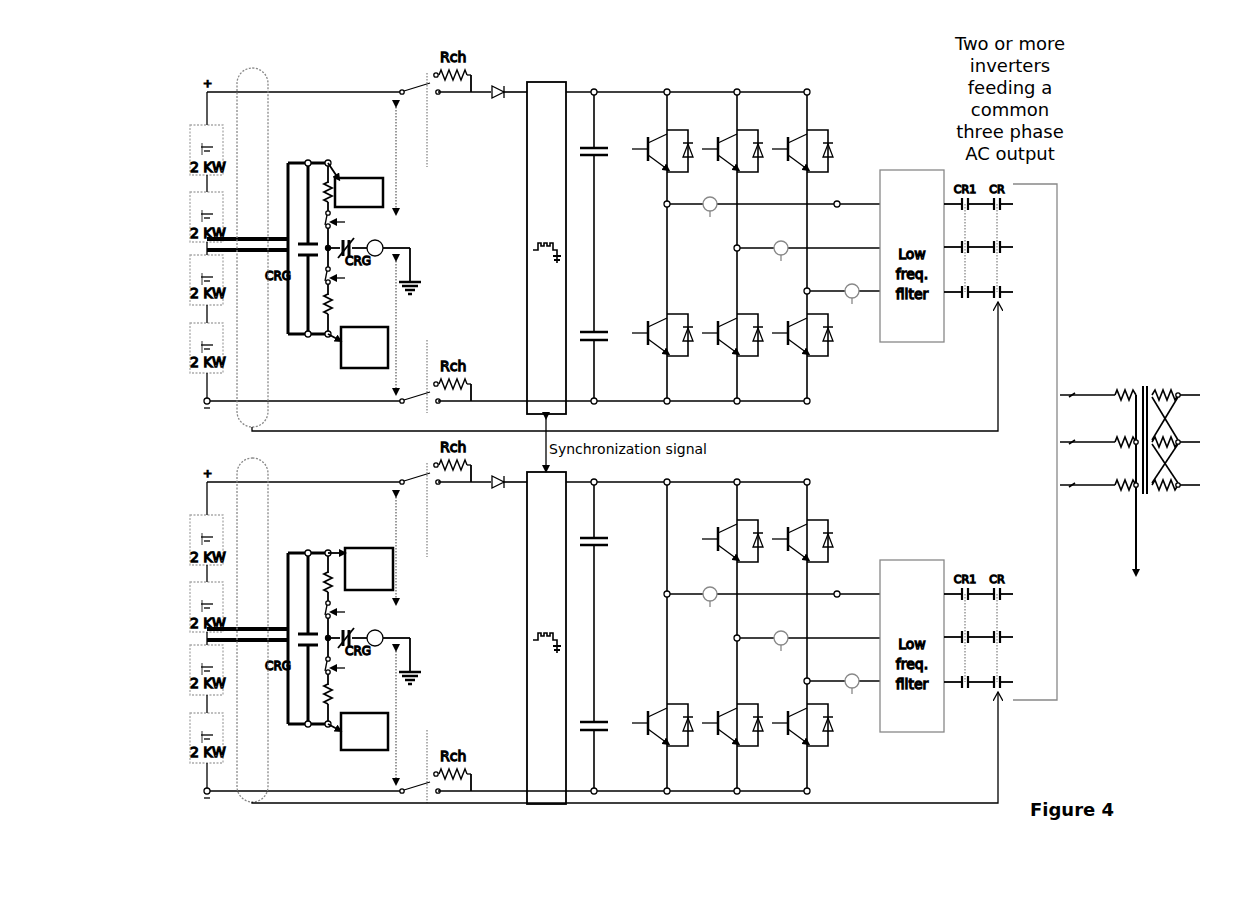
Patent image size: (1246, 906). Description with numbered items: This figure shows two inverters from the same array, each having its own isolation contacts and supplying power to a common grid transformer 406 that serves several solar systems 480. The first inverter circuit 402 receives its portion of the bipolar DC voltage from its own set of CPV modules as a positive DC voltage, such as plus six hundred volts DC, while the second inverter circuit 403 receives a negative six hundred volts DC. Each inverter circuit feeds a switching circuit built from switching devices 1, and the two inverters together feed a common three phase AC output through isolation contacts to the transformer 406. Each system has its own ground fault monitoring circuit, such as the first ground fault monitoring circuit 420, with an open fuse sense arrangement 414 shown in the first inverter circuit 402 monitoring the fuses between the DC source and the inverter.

The first inverter circuit 402 is at (601, 238).
The second inverter circuit 403 is at (601, 621).
The ground fault monitor / open fuse sense 414 is at (345, 161).
The first ground fault monitoring circuit 420 is at (360, 569).
The large transformer 406 is at (1111, 479).
The solar systems 480 is at (1130, 282).
The IGBT switch 1 is at (662, 145).